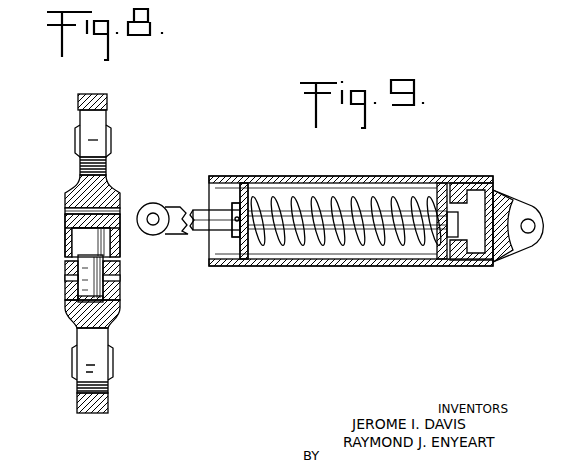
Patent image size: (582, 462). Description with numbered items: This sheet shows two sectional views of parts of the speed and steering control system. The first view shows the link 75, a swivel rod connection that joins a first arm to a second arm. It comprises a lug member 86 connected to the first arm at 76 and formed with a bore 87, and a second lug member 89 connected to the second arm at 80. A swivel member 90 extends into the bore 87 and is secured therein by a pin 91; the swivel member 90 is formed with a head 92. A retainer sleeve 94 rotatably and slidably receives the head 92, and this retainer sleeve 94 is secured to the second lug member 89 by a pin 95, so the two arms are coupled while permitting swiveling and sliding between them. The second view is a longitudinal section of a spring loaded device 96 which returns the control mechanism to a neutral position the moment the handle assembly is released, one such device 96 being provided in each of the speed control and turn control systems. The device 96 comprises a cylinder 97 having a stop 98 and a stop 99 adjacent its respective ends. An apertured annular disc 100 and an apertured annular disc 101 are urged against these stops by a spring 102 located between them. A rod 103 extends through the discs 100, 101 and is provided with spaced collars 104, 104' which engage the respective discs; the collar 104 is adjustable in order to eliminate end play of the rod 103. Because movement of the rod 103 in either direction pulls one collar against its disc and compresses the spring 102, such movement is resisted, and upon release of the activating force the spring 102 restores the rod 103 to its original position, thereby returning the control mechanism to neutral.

In FIG. 8, the link 75 is at (47, 216).
In FIG. 8, the connection point on first arm 76 is at (112, 362).
In FIG. 8, the connection point on second arm 80 is at (110, 141).
In FIG. 8, the lug member 86 is at (86, 336).
In FIG. 8, the bore 87 is at (93, 299).
In FIG. 8, the second lug member 89 is at (107, 168).
In FIG. 8, the swivel member 90 is at (98, 272).
In FIG. 8, the pin 91 is at (120, 279).
In FIG. 8, the head 92 is at (80, 244).
In FIG. 8, the retainer sleeve 94 is at (66, 232).
In FIG. 8, the pin 95 is at (121, 211).
In FIG. 9, the spring loaded device 96 is at (343, 282).
In FIG. 9, the cylinder 97 is at (396, 266).
In FIG. 9, the stop 98 is at (443, 262).
In FIG. 9, the stop 99 is at (243, 262).
In FIG. 9, the apertured annular disc 100 is at (462, 198).
In FIG. 9, the apertured annular disc 101 is at (258, 262).
In FIG. 9, the spring 102 is at (322, 196).
In FIG. 9, the rod 103 is at (378, 212).
In FIG. 9, the collar 104 is at (517, 217).
In FIG. 9, the collar 104' is at (196, 202).